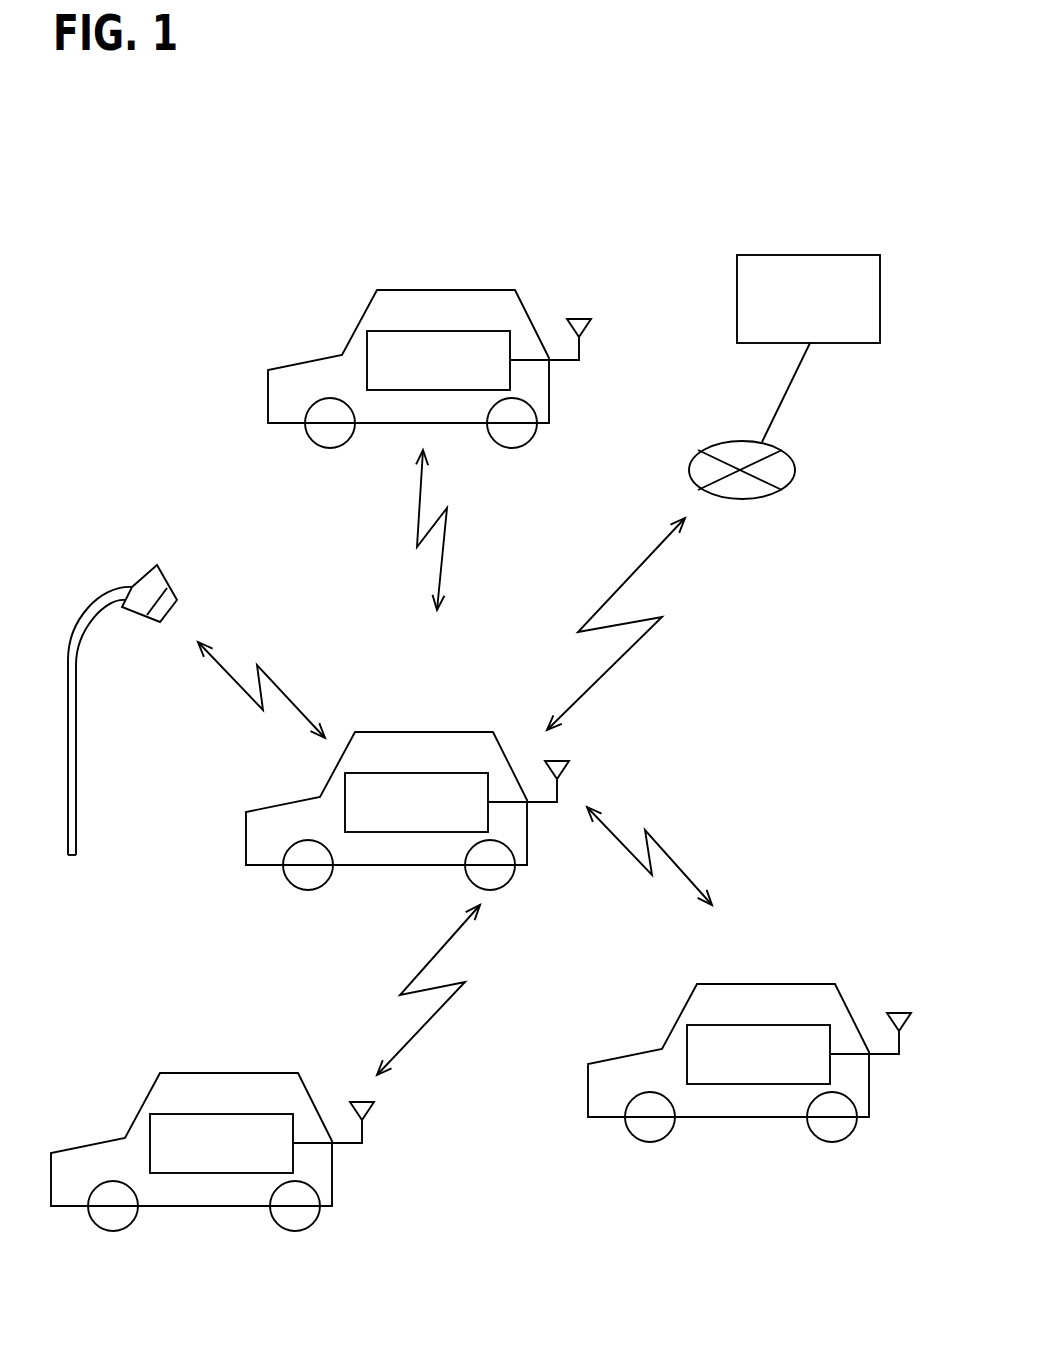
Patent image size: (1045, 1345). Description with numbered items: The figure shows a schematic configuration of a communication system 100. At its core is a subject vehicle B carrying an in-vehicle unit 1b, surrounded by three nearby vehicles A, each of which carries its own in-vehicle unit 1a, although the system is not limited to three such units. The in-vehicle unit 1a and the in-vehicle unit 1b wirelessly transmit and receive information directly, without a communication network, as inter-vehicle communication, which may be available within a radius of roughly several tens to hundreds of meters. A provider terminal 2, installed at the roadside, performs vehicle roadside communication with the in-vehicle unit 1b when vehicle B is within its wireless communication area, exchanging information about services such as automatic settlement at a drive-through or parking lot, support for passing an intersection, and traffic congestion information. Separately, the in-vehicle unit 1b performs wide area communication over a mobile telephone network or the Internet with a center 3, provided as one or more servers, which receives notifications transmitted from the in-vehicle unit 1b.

The communication system 100 is at (815, 160).
The vehicle A is at (481, 711).
The vehicle B is at (407, 762).
The in-vehicle unit 1a is at (490, 682).
The in-vehicle unit 1b is at (416, 733).
The provider terminal 2 is at (143, 583).
The center 3 is at (857, 255).